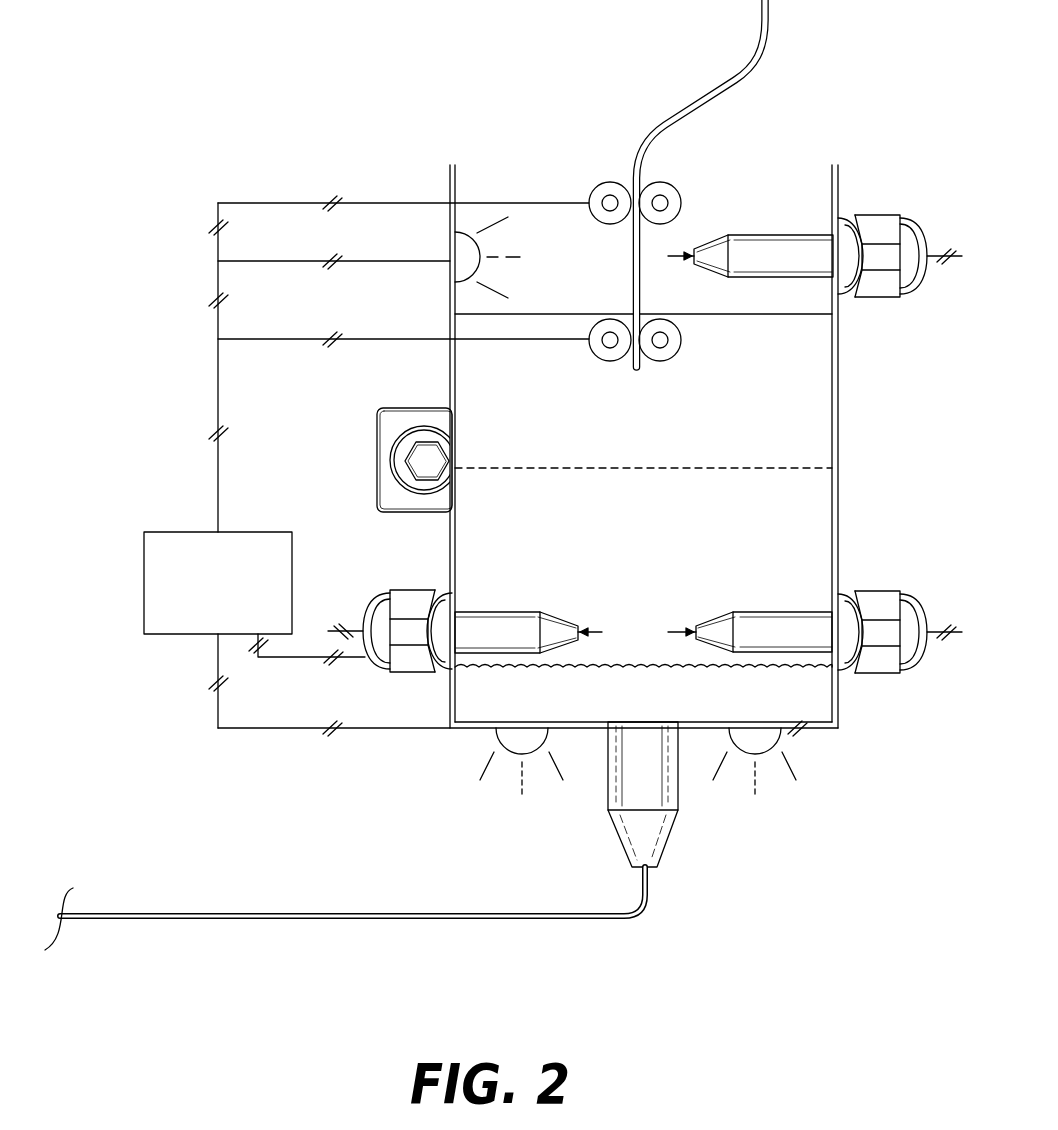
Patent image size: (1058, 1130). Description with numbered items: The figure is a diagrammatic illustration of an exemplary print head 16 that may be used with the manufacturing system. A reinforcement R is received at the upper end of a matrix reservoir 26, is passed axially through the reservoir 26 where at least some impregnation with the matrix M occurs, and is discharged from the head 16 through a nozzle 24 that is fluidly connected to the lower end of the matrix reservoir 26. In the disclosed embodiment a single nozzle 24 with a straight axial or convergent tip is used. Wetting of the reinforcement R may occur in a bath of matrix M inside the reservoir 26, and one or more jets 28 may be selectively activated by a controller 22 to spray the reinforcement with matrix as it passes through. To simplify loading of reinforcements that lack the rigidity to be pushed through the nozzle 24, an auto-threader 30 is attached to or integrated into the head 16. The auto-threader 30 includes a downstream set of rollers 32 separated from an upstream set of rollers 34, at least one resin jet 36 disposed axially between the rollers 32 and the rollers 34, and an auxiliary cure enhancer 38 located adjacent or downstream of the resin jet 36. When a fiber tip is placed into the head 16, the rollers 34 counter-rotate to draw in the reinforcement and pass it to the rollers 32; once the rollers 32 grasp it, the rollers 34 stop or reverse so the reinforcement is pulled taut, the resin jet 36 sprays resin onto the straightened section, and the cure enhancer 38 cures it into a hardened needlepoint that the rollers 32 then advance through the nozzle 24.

The head 16 is at (890, 812).
The controller 22 is at (208, 594).
The nozzle 24 is at (633, 781).
The matrix reservoir 26 is at (632, 705).
The jets 28 is at (487, 642).
The auto-threader 30 is at (529, 381).
The downstream set of rollers 32 is at (680, 348).
The upstream set of rollers 34 is at (668, 188).
The resin jet 36 is at (770, 267).
The auxiliary cure enhancer 38 is at (455, 266).
The reinforcement R is at (742, 70).
The matrix M is at (818, 700).